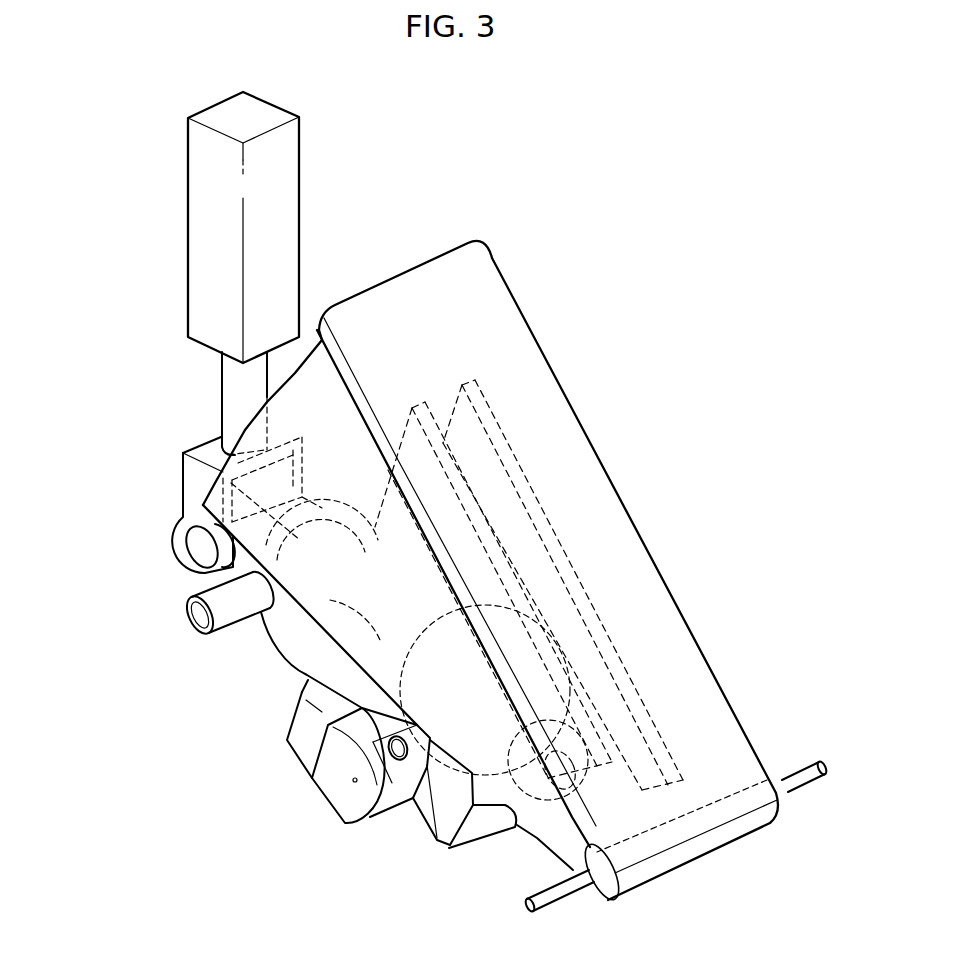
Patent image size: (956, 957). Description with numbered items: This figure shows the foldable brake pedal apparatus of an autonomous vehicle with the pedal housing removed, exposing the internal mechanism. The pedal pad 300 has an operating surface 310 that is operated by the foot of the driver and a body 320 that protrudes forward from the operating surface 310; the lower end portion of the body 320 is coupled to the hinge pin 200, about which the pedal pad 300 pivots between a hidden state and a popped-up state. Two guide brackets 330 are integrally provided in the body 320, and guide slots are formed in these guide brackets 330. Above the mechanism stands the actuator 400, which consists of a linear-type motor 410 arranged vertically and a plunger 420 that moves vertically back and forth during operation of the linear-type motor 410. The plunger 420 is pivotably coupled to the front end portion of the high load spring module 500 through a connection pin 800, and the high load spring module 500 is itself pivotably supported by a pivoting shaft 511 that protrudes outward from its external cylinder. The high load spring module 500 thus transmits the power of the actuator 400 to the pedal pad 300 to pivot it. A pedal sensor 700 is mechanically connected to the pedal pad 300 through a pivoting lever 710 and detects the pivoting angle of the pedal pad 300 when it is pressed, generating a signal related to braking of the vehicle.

The hinge pin 200 is at (807, 777).
The pedal pad 300 is at (495, 565).
The operating surface 310 is at (480, 280).
The body 320 is at (338, 614).
The guide brackets 330 is at (500, 566).
The actuator 400 is at (177, 273).
The linear-type motor 410 is at (212, 248).
The plunger 420 is at (230, 400).
The high load spring module 500 is at (336, 641).
The pivoting shaft 511 is at (197, 617).
The pedal sensor 700 is at (420, 793).
The pivoting lever 710 is at (428, 822).
The connection pin 800 is at (197, 548).